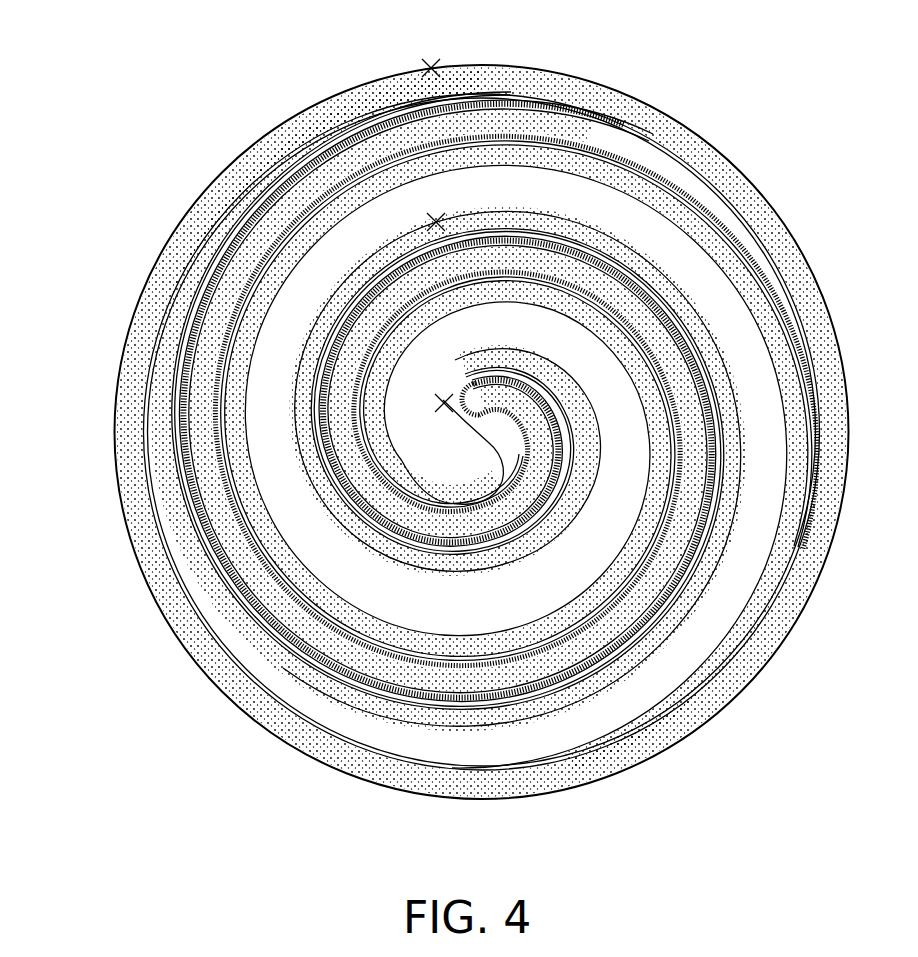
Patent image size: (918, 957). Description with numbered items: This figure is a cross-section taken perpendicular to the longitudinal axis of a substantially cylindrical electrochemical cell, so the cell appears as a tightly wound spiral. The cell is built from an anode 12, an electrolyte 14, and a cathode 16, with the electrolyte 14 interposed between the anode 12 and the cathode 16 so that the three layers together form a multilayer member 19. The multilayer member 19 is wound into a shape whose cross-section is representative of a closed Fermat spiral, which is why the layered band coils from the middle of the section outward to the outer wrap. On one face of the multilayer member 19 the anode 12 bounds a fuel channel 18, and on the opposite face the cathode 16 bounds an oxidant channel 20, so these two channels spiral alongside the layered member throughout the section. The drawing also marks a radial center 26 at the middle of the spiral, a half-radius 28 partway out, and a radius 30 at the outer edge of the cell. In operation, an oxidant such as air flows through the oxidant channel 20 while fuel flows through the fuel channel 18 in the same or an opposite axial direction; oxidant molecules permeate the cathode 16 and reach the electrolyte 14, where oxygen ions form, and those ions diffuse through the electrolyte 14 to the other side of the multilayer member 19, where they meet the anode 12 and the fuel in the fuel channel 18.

The anode 12 is at (742, 190).
The electrolyte 14 is at (817, 404).
The cathode 16 is at (362, 400).
The fuel channel 18 is at (297, 373).
The multilayer member 19 is at (508, 726).
The oxidant channel 20 is at (470, 115).
The radial center 26 is at (444, 403).
The half-radius 28 is at (436, 222).
The radius 30 is at (431, 68).